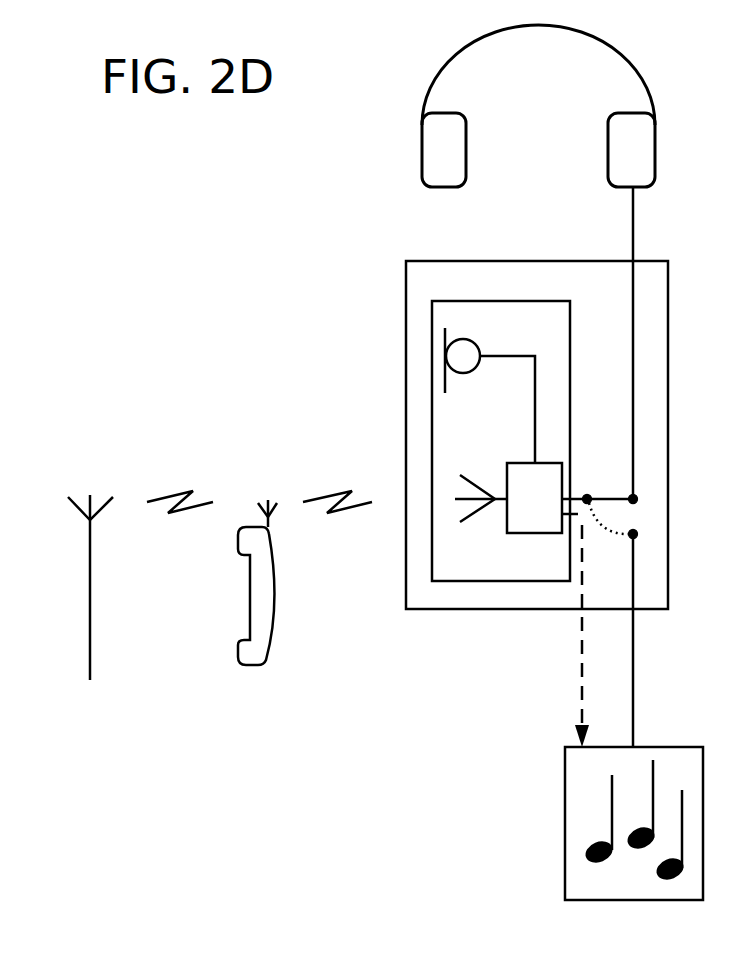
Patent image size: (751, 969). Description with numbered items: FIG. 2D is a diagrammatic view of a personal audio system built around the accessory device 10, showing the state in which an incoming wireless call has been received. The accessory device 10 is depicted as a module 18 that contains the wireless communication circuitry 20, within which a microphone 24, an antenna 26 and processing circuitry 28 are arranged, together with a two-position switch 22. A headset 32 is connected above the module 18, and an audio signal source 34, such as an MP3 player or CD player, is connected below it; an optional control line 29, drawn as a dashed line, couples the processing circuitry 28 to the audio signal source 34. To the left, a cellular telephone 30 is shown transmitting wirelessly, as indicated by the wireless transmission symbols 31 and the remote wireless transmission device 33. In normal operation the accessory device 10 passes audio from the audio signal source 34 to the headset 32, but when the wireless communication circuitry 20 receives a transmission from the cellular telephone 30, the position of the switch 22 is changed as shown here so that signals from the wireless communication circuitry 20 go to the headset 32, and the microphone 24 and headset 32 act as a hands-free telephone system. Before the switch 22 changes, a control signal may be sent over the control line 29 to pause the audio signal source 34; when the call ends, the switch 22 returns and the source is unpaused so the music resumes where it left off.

The accessory device 10 is at (496, 472).
The module 18 is at (670, 530).
The wireless communication circuitry 20 is at (432, 328).
The switch 22 is at (635, 517).
The microphone 24 is at (478, 347).
The antenna 26 is at (470, 518).
The processing circuitry 28 is at (537, 533).
The control line 29 is at (578, 710).
The cellular telephone 30 is at (250, 595).
The wireless transmission symbols 31 is at (167, 480).
The headset 32 is at (420, 167).
The remote wireless transmission device 33 is at (72, 492).
The audio signal source 34 is at (565, 838).